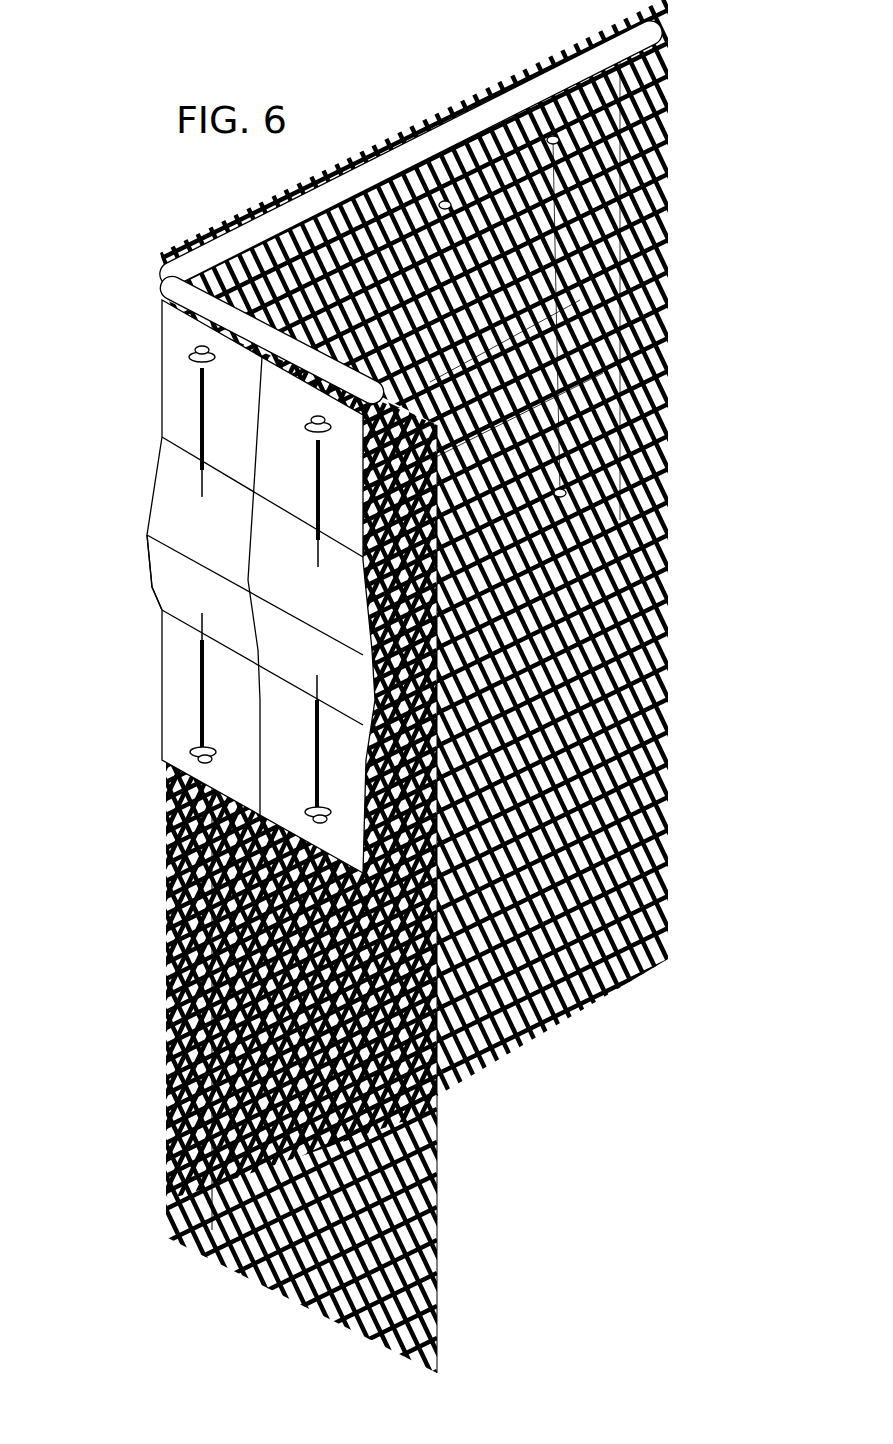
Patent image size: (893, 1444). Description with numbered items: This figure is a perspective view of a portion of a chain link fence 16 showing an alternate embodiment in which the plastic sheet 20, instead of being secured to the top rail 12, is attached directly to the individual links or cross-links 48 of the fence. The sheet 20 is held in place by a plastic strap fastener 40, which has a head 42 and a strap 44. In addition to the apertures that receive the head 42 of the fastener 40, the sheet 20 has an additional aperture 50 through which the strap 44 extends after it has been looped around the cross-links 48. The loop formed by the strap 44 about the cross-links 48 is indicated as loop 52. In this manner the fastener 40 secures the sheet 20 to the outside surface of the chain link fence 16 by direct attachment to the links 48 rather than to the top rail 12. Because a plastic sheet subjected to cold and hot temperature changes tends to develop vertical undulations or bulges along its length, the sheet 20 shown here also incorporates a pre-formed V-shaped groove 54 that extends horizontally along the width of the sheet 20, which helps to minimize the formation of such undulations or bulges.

The top rail 12 is at (248, 247).
The chain link fence 16 is at (668, 568).
The sheet 20 is at (120, 390).
The fastener 40 is at (183, 405).
The head 42 is at (212, 757).
The strap 44 is at (200, 698).
The cross-links 48 is at (643, 610).
The aperture 50 is at (623, 463).
The loop 52 is at (593, 118).
The V-shaped groove 54 is at (152, 590).